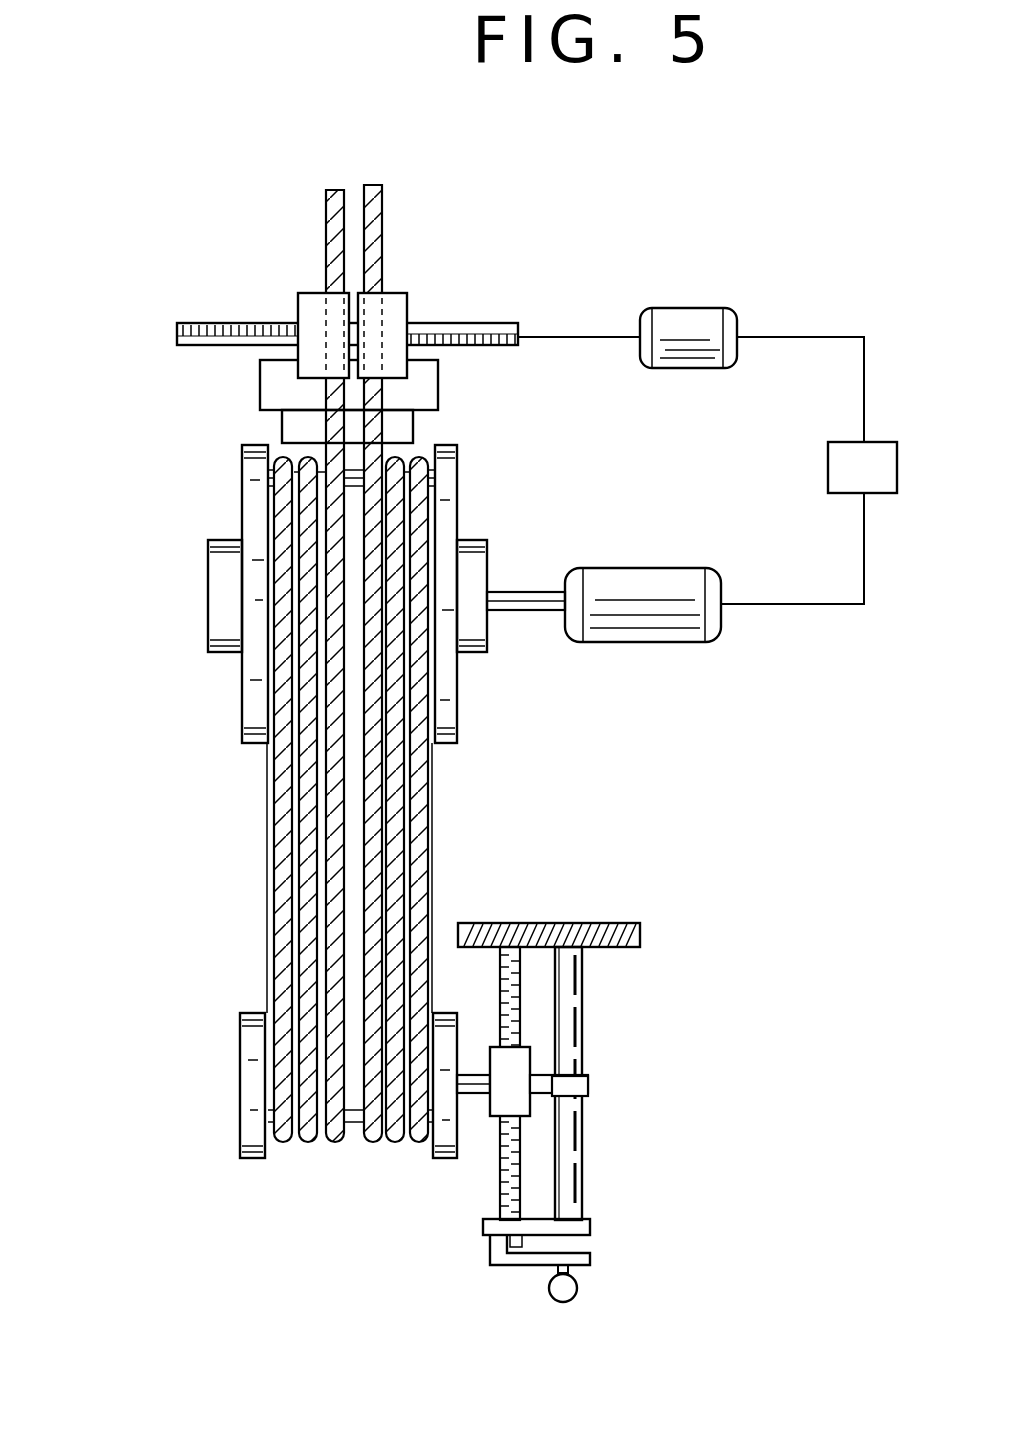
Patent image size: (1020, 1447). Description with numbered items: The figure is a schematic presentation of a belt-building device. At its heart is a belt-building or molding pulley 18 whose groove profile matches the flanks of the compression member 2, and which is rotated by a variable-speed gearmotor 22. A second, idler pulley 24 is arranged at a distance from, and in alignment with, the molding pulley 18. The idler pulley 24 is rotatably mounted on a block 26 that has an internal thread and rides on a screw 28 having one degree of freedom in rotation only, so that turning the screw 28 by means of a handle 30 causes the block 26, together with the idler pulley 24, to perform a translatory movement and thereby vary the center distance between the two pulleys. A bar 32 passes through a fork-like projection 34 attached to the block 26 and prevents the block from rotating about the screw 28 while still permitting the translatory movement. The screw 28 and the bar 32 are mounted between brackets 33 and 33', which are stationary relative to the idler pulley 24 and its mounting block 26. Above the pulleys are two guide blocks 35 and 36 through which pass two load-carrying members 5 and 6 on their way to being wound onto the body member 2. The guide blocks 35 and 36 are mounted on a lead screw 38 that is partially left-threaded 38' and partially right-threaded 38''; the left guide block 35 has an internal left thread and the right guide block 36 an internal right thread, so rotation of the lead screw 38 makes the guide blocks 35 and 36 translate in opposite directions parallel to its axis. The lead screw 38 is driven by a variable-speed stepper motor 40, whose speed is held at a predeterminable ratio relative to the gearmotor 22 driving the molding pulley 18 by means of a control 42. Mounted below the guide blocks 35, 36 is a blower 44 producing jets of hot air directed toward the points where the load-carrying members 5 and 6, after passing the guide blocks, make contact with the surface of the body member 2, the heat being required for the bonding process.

The compression member 2 is at (350, 785).
The load-carrying member 5 is at (325, 242).
The load-carrying member 6 is at (377, 223).
The molding pulley 18 is at (245, 483).
The variable-speed gearmotor 22 is at (630, 582).
The idler pulley 24 is at (247, 1045).
The block 26 is at (500, 1063).
The screw 28 is at (500, 1175).
The handle 30 is at (563, 1302).
The bar 32 is at (585, 1175).
The bracket 33 is at (557, 898).
The bracket 33' is at (616, 1242).
The fork-like projection 34 is at (588, 1088).
The left guide block 35 is at (303, 305).
The right guide block 36 is at (403, 305).
The lead screw 38 is at (380, 369).
The left threaded portion 38' is at (169, 346).
The right threaded portion 38'' is at (510, 278).
The variable-speed stepper motor 40 is at (677, 325).
The control 42 is at (835, 462).
The blower 44 is at (268, 380).